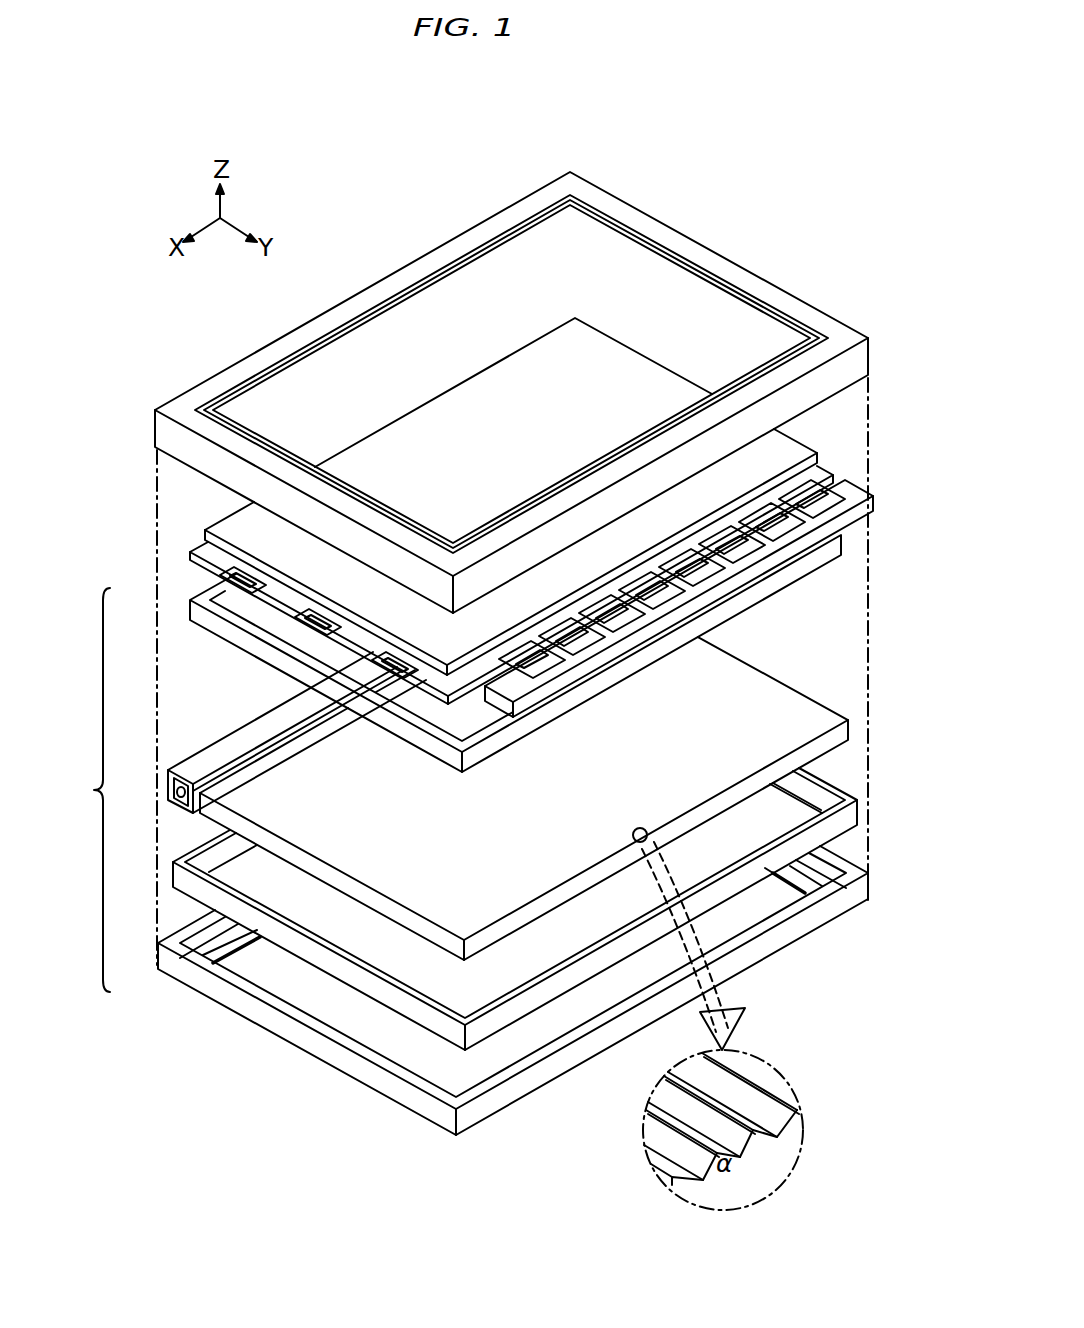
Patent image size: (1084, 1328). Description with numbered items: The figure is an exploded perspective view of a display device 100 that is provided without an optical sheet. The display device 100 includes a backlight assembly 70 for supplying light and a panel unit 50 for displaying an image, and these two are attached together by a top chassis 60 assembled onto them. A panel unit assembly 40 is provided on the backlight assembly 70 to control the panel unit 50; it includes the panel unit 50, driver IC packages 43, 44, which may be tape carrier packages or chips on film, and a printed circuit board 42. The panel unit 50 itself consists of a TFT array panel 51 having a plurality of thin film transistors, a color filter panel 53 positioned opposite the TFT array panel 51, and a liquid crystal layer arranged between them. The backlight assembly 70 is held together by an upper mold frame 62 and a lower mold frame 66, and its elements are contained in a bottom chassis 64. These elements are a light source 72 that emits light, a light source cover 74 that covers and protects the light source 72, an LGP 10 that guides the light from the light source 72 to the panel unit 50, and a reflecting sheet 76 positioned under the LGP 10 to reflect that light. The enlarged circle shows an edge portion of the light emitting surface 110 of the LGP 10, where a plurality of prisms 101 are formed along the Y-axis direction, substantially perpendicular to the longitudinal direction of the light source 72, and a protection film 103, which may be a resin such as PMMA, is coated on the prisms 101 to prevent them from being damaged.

The display device 100 is at (491, 176).
The top chassis 60 is at (737, 266).
The panel unit 50 is at (503, 388).
The panel unit assembly 40 is at (203, 522).
The color filter panel 53 is at (796, 441).
The TFT array panel 51 is at (826, 471).
The driver IC package 43 is at (218, 577).
The driver IC package 44 is at (840, 486).
The printed circuit board 42 is at (876, 494).
The upper mold frame 62 is at (188, 604).
The backlight assembly 70 is at (86, 790).
The light source cover 74 is at (176, 787).
The light source 72 is at (182, 802).
The LGP 10 is at (851, 723).
The reflecting sheet 76 is at (790, 813).
The bottom chassis 64 is at (172, 866).
The lower mold frame 66 is at (157, 948).
The light emitting surface 110 is at (418, 878).
The prisms 101 is at (765, 1150).
The protection film 103 is at (677, 1180).